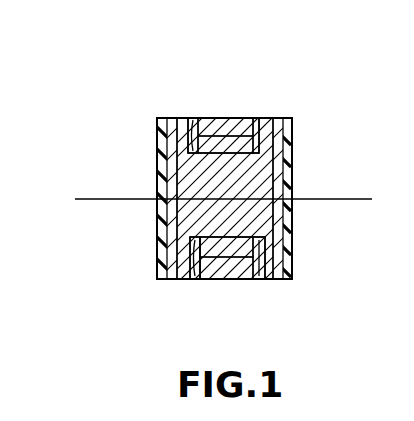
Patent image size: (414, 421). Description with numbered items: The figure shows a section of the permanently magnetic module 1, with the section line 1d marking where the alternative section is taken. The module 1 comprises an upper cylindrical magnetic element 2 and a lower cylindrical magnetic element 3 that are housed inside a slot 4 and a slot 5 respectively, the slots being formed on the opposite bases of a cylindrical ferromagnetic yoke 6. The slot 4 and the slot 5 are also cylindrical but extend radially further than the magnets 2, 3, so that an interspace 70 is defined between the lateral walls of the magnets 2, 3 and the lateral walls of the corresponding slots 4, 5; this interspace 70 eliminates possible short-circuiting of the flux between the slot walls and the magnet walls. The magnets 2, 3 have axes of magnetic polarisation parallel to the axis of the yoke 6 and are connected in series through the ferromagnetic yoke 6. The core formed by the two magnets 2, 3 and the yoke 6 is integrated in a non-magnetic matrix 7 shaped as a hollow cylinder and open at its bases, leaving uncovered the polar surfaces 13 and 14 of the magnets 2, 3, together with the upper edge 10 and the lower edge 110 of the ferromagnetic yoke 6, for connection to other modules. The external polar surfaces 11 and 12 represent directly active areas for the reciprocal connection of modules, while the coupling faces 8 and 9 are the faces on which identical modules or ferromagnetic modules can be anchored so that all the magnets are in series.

The permanently magnetic module 1 is at (147, 171).
The section of permanently magnetic module 1d is at (216, 201).
The upper cylindrical magnetic element 2 is at (238, 118).
The lower cylindrical magnetic element 3 is at (239, 279).
The slot 4 is at (190, 118).
The slot 5 is at (197, 279).
The cylindrical ferromagnetic yoke 6 is at (200, 212).
The non-magnetic matrix 7 is at (157, 143).
The coupling face 8 is at (252, 118).
The coupling face 9 is at (258, 279).
The upper edge of ferromagnetic yoke 10 is at (170, 118).
The external polar surface 11 is at (245, 160).
The external polar surface 12 is at (262, 238).
The polar surface 13 is at (208, 118).
The polar surface 14 is at (217, 279).
The interspace 70 is at (262, 261).
The lower edge of ferromagnetic yoke 110 is at (182, 279).